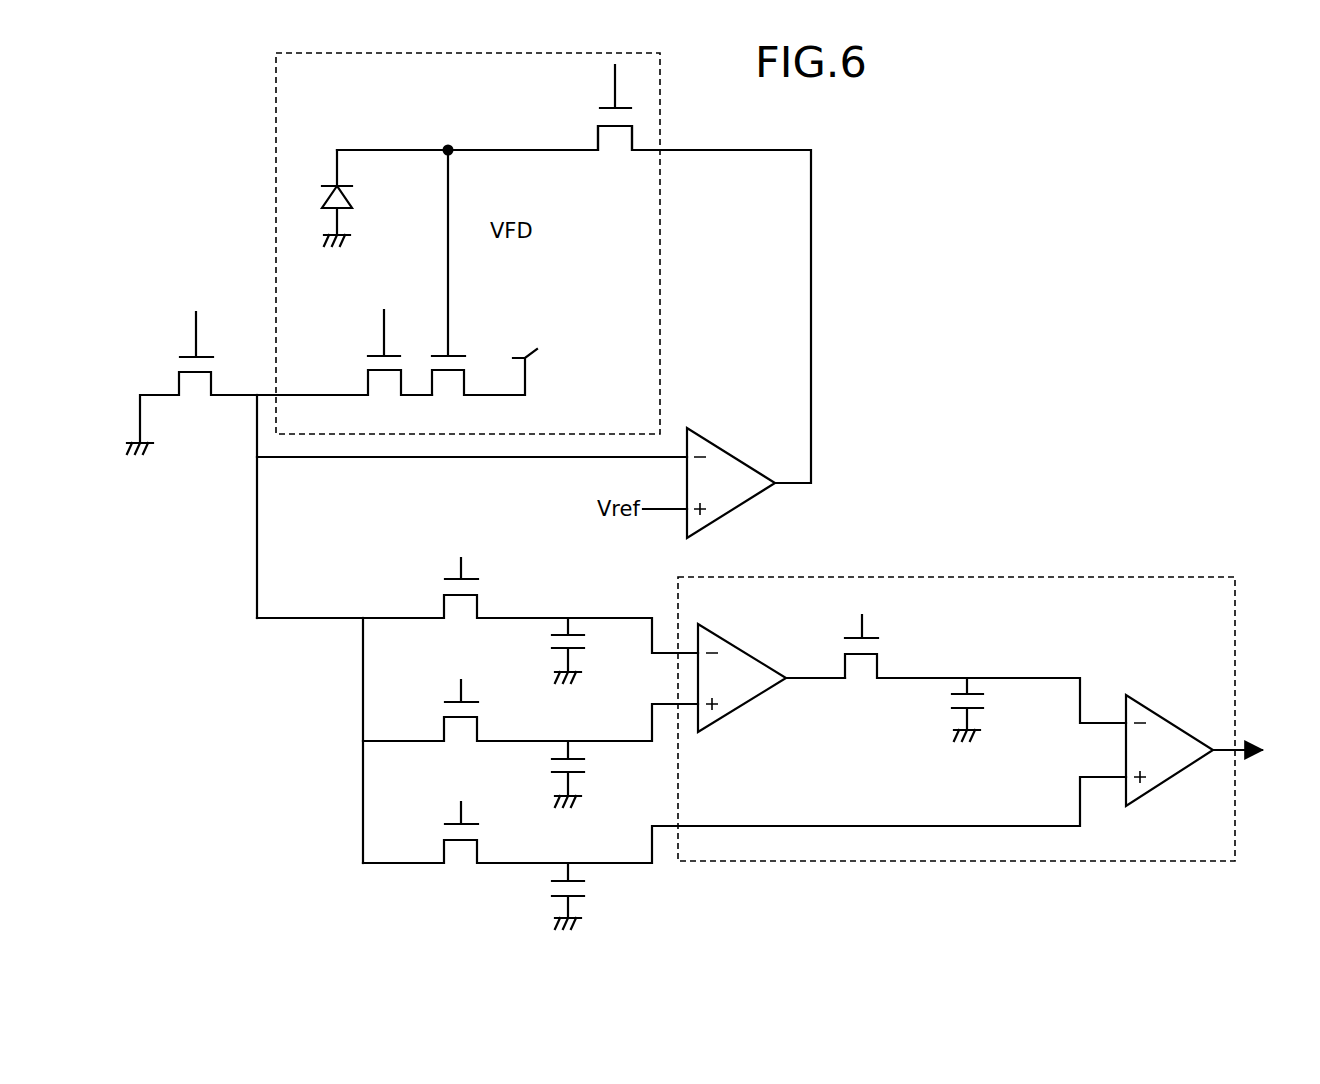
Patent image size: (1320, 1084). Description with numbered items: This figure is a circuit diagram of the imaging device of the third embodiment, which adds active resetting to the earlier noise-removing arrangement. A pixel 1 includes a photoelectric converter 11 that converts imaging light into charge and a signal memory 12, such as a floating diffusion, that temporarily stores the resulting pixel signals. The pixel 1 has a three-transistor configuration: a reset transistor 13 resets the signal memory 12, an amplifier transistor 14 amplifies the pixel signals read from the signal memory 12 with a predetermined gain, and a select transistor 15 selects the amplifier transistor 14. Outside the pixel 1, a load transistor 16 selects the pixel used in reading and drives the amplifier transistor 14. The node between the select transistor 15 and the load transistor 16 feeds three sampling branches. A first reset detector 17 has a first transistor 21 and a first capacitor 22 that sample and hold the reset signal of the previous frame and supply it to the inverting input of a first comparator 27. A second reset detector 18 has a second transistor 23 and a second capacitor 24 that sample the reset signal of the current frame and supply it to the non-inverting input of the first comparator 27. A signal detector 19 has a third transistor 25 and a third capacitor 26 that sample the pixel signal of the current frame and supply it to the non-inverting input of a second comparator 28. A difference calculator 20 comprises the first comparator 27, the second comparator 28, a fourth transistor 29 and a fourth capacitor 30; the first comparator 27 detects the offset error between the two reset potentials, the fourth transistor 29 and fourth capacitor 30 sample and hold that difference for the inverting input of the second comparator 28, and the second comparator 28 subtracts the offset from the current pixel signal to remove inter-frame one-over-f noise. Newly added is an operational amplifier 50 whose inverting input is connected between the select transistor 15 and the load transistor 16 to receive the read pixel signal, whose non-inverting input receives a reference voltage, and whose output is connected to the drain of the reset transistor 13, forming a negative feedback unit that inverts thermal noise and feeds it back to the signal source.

The pixel 1 is at (487, 232).
The photoelectric converter 11 is at (322, 168).
The signal memory 12 is at (470, 128).
The reset transistor 13 is at (625, 193).
The amplifier transistor 14 is at (462, 338).
The select transistor 15 is at (360, 364).
The load transistor 16 is at (175, 342).
The first reset detector 17 is at (523, 628).
The second reset detector 18 is at (523, 750).
The signal detector 19 is at (523, 873).
The difference calculator 20 is at (1073, 576).
The first transistor 21 is at (444, 603).
The first capacitor 22 is at (578, 651).
The second transistor 23 is at (444, 726).
The second capacitor 24 is at (578, 775).
The third transistor 25 is at (444, 848).
The third capacitor 26 is at (578, 898).
The first comparator 27 is at (743, 649).
The second comparator 28 is at (1175, 782).
The fourth transistor 29 is at (845, 665).
The fourth capacitor 30 is at (953, 713).
The operational amplifier 50 is at (738, 456).